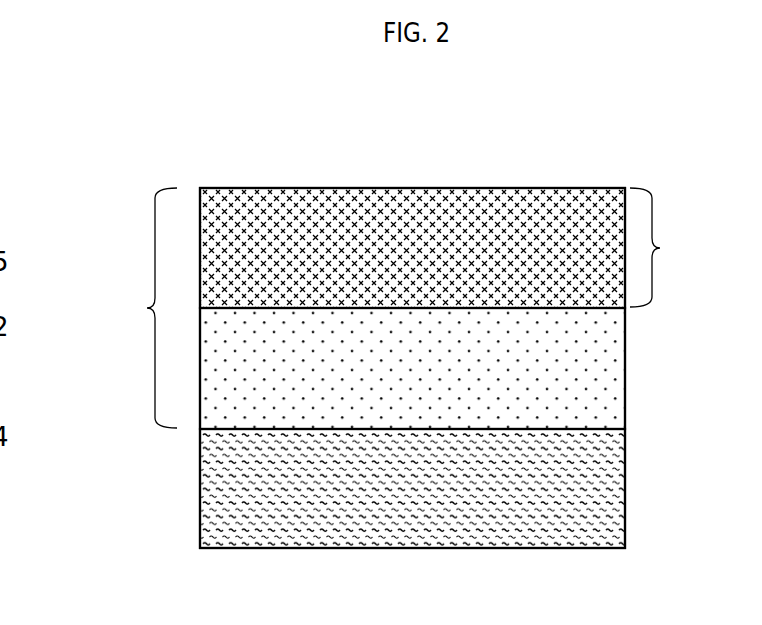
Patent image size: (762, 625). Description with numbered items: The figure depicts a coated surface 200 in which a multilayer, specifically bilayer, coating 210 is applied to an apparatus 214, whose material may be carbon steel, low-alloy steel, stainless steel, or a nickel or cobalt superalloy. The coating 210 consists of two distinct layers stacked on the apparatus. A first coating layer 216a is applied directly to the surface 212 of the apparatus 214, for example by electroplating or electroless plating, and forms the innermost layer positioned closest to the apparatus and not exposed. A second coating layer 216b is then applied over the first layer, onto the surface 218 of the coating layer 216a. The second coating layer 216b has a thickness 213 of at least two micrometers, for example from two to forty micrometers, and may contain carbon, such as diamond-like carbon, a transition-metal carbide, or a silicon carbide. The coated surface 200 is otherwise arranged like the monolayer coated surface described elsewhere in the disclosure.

The coated surface 200 is at (92, 178).
The coating 210 is at (147, 308).
The surface 212 is at (580, 429).
The thickness 213 is at (660, 248).
The apparatus 214 is at (626, 488).
The coating layer 216a is at (628, 368).
The coating layer 216b is at (412, 187).
The surface 218 is at (499, 297).